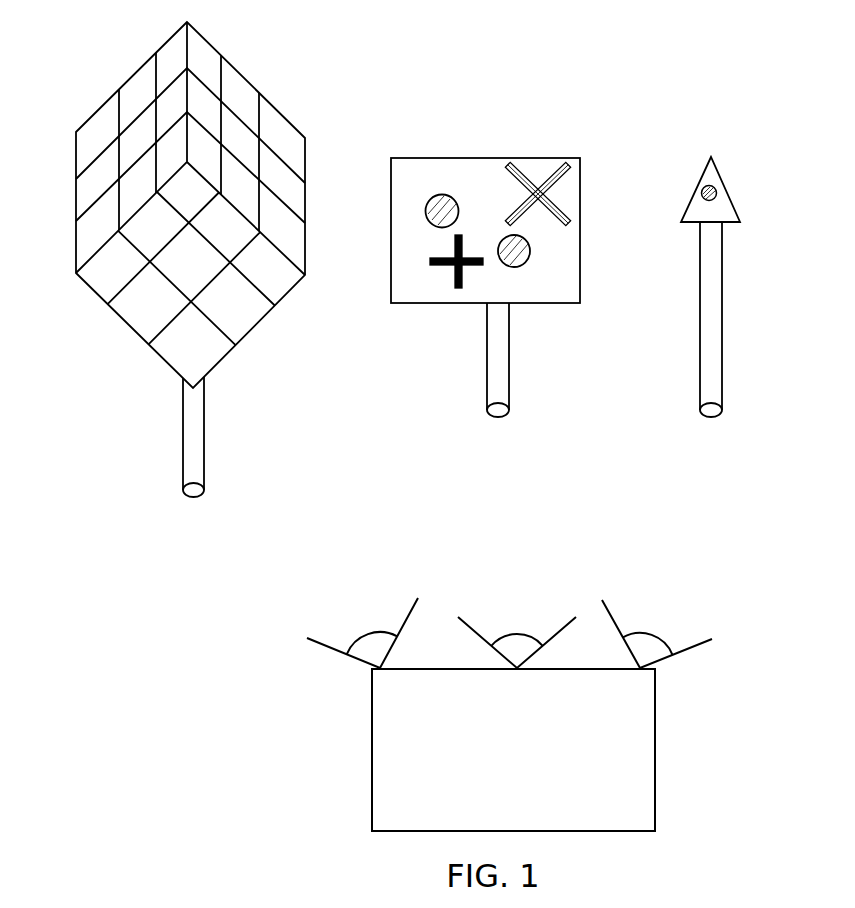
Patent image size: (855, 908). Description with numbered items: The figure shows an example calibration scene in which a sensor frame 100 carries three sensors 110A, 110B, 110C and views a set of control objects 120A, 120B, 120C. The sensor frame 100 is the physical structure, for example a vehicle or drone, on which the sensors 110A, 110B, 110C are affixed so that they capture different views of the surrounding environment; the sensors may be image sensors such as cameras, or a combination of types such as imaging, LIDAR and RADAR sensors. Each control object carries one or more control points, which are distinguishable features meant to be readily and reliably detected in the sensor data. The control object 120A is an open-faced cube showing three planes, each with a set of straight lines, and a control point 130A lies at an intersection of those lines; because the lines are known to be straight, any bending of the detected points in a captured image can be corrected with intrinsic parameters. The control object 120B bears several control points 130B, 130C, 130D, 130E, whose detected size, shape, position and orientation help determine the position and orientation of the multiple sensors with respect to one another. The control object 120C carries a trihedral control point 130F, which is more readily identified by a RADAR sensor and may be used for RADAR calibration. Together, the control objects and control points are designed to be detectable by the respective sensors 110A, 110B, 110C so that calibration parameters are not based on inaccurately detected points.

The sensor frame 100 is at (513, 750).
The sensor 110A is at (297, 633).
The sensor 110B is at (568, 658).
The sensor 110C is at (728, 643).
The control object 120A is at (72, 82).
The control object 120B is at (558, 372).
The control object 120C is at (737, 354).
The control point 130A is at (259, 137).
The control point 130B is at (424, 213).
The control point 130C is at (430, 261).
The control point 130D is at (603, 157).
The control point 130E is at (533, 252).
The trihedral control point 130F is at (737, 183).